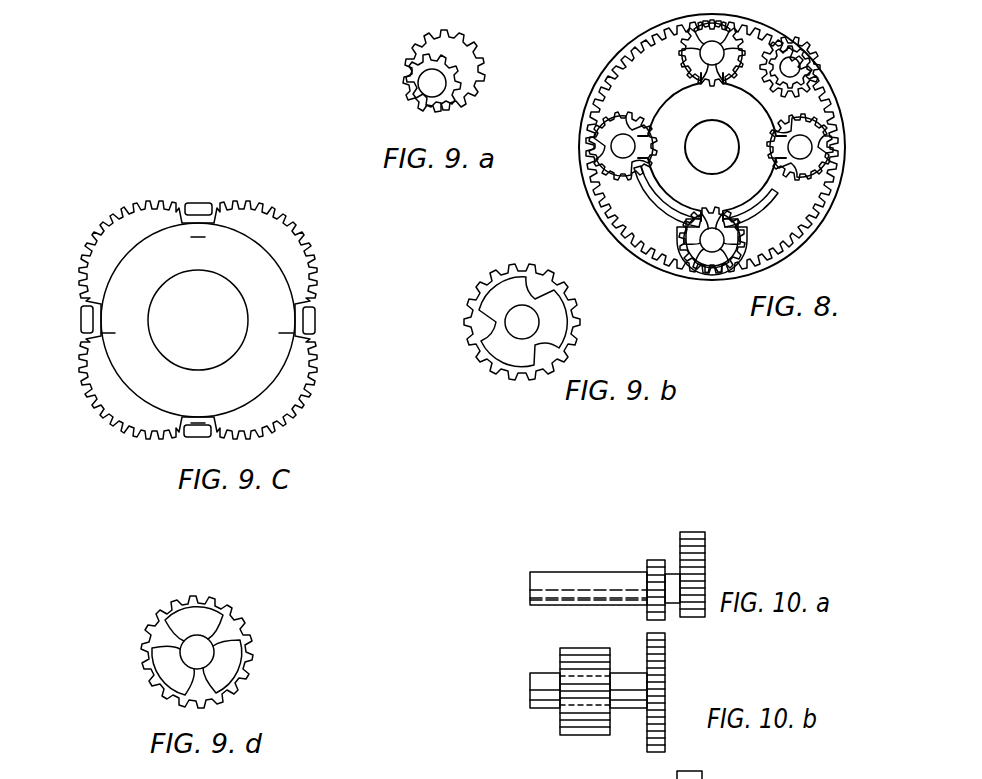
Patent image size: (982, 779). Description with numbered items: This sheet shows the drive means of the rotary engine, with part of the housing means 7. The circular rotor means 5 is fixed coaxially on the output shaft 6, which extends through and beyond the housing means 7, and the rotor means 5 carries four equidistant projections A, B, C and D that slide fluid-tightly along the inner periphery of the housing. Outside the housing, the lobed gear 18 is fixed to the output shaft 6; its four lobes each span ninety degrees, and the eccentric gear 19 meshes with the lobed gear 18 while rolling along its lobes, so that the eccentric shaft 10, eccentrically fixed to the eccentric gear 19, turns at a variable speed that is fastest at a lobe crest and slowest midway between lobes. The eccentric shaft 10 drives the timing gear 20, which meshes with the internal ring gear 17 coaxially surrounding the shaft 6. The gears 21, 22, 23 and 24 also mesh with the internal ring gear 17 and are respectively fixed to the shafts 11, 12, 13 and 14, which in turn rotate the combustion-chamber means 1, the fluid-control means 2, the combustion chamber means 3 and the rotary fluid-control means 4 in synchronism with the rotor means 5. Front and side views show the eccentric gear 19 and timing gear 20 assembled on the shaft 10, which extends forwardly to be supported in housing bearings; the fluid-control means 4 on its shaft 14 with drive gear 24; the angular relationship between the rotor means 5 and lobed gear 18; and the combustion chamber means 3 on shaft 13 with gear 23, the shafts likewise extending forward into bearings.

In FIG. 8, the combustion-chamber means 1 is at (690, 70).
In FIG. 8, the fluid-control means 2 is at (633, 168).
In FIG. 8, the combustion chamber means 3 is at (723, 237).
In FIG. 9d, the combustion chamber means 3 is at (224, 640).
In FIG. 8, the rotary fluid-control means 4 is at (819, 168).
In FIG. 9b, the rotary fluid-control means 4 is at (512, 358).
In FIG. 10b, the rotary fluid-control means 4 is at (570, 723).
In FIG. 8, the rotor means 5 is at (678, 180).
In FIG. 9c, the rotor means 5 is at (268, 360).
In FIG. 8, the output shaft 6 is at (712, 147).
In FIG. 9c, the output shaft 6 is at (198, 320).
In FIG. 8, the housing means 7 is at (755, 210).
In FIG. 8, the eccentric shaft 10 is at (786, 62).
In FIG. 9a, the eccentric shaft 10 is at (425, 100).
In FIG. 10a, the eccentric shaft 10 is at (545, 582).
In FIG. 8, the shaft 11 is at (714, 62).
In FIG. 8, the shaft 12 is at (637, 146).
In FIG. 8, the shaft 13 is at (722, 243).
In FIG. 9d, the shaft 13 is at (204, 656).
In FIG. 8, the shaft 14 is at (787, 130).
In FIG. 9b, the shaft 14 is at (528, 330).
In FIG. 10b, the shaft 14 is at (545, 686).
In FIG. 8, the internal ring gear 17 is at (690, 219).
In FIG. 8, the lobed gear 18 is at (643, 104).
In FIG. 9c, the lobed gear 18 is at (278, 230).
In FIG. 10b, the lobed gear 18 is at (716, 774).
In FIG. 8, the eccentric gear 19 is at (821, 57).
In FIG. 9a, the eccentric gear 19 is at (465, 90).
In FIG. 10a, the eccentric gear 19 is at (697, 556).
In FIG. 8, the timing gear 20 is at (798, 83).
In FIG. 9a, the timing gear 20 is at (414, 96).
In FIG. 10a, the timing gear 20 is at (655, 578).
In FIG. 8, the gear 21 is at (704, 49).
In FIG. 8, the drive gear 22 is at (610, 124).
In FIG. 8, the gear 23 is at (722, 285).
In FIG. 9d, the gear 23 is at (195, 615).
In FIG. 8, the drive gear 24 is at (808, 184).
In FIG. 9b, the drive gear 24 is at (480, 328).
In FIG. 10b, the drive gear 24 is at (658, 692).